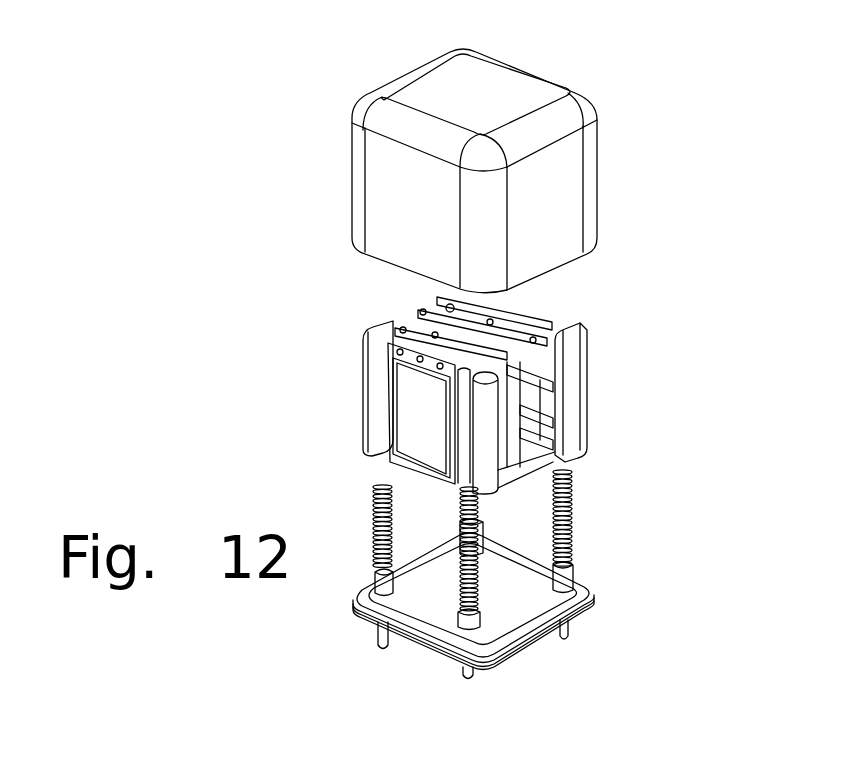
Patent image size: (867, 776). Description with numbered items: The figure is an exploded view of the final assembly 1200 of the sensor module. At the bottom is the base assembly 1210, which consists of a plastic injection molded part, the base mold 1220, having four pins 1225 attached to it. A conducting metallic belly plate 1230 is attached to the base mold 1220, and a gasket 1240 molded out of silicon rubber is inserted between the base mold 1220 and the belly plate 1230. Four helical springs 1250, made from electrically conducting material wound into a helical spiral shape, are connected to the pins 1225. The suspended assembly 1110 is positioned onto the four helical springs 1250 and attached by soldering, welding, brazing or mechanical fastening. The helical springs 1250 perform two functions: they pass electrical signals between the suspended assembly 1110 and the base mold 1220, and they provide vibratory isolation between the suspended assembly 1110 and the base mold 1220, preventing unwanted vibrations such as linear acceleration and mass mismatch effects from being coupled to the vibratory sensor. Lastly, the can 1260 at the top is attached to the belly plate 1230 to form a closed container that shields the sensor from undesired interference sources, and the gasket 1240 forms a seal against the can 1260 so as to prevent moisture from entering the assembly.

The final assembly 1200 is at (197, 202).
The can 1260 is at (597, 163).
The suspended assembly 1110 is at (599, 387).
The helical springs 1250 is at (580, 503).
The pins 1225 is at (585, 578).
The base assembly 1210 is at (601, 590).
The base mold 1220 is at (584, 620).
The belly plate 1230 is at (519, 660).
The gasket 1240 is at (413, 614).